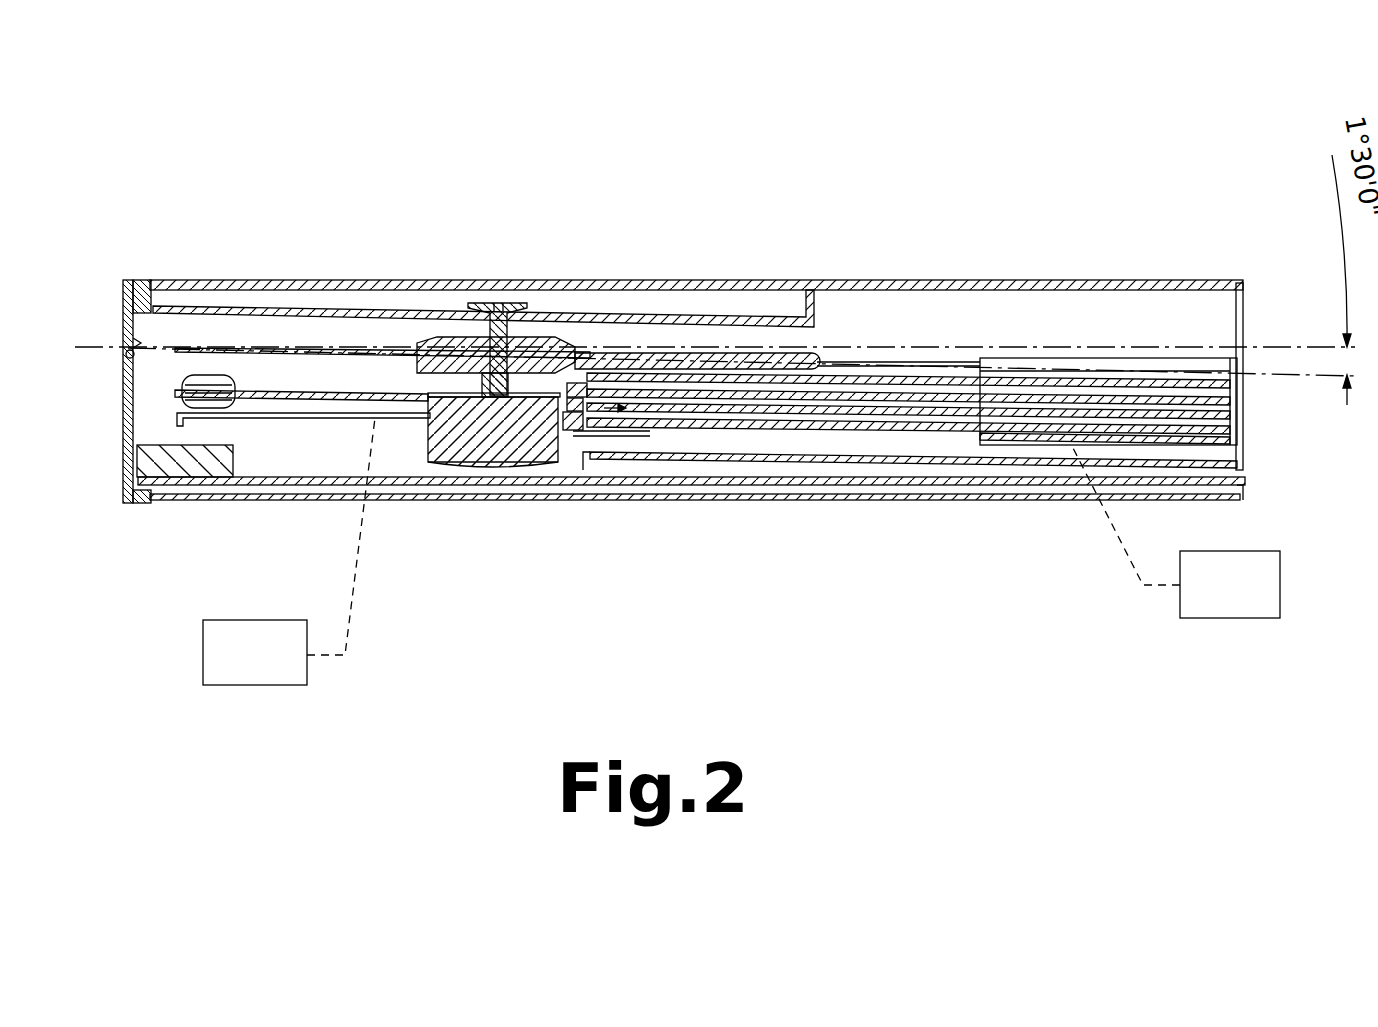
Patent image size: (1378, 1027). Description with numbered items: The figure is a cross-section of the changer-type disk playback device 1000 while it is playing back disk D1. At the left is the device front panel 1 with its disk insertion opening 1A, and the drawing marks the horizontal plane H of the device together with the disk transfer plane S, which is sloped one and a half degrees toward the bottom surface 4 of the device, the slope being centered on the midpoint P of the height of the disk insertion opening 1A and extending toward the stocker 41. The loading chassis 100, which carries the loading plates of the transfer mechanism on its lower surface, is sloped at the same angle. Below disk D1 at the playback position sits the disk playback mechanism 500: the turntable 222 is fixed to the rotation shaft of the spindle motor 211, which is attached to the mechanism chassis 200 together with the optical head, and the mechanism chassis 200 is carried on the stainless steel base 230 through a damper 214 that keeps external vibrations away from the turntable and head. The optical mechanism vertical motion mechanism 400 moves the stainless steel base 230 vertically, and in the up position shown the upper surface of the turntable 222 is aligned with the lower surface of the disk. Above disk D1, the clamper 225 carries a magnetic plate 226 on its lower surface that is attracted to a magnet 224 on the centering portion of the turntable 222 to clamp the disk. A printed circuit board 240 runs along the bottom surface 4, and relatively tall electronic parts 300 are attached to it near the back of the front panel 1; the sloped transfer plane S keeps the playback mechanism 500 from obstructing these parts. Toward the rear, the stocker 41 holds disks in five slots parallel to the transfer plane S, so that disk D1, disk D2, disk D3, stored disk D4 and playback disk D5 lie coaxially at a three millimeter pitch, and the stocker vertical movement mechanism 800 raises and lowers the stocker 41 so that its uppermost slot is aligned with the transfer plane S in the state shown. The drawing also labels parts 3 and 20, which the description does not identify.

The device front panel 1 is at (130, 468).
The disk insertion opening 1A is at (127, 343).
The midpoint of the disk insertion opening P is at (125, 357).
The top cover 3 is at (935, 282).
The bottom surface 4 is at (985, 480).
The support plate 20 is at (743, 457).
The stocker 41 is at (1113, 358).
The loading chassis 100 is at (367, 312).
The mechanism chassis 200 is at (335, 400).
The spindle motor 211 is at (425, 457).
The damper 214 is at (200, 376).
The turntable 222 is at (428, 397).
The magnet 224 is at (505, 400).
The clamper 225 is at (447, 337).
The magnetic plate 226 is at (528, 318).
The stainless steel base 230 is at (260, 414).
The printed circuit board 240 is at (417, 372).
The electronic parts 300 is at (197, 460).
The optical mechanism vertical motion mechanism 400 is at (289, 551).
The disk playback mechanism 500 is at (353, 378).
The stocker vertical movement mechanism 800 is at (1176, 533).
The changer-type disk playback device 1000 is at (757, 272).
The disk D1 is at (772, 366).
The disk 2 D2 is at (827, 380).
The disk 3 D3 is at (808, 397).
The stored disk D4 is at (788, 410).
The playback disk D5 is at (775, 427).
The horizontal plane H is at (1245, 347).
The disk transfer plane S is at (1245, 375).